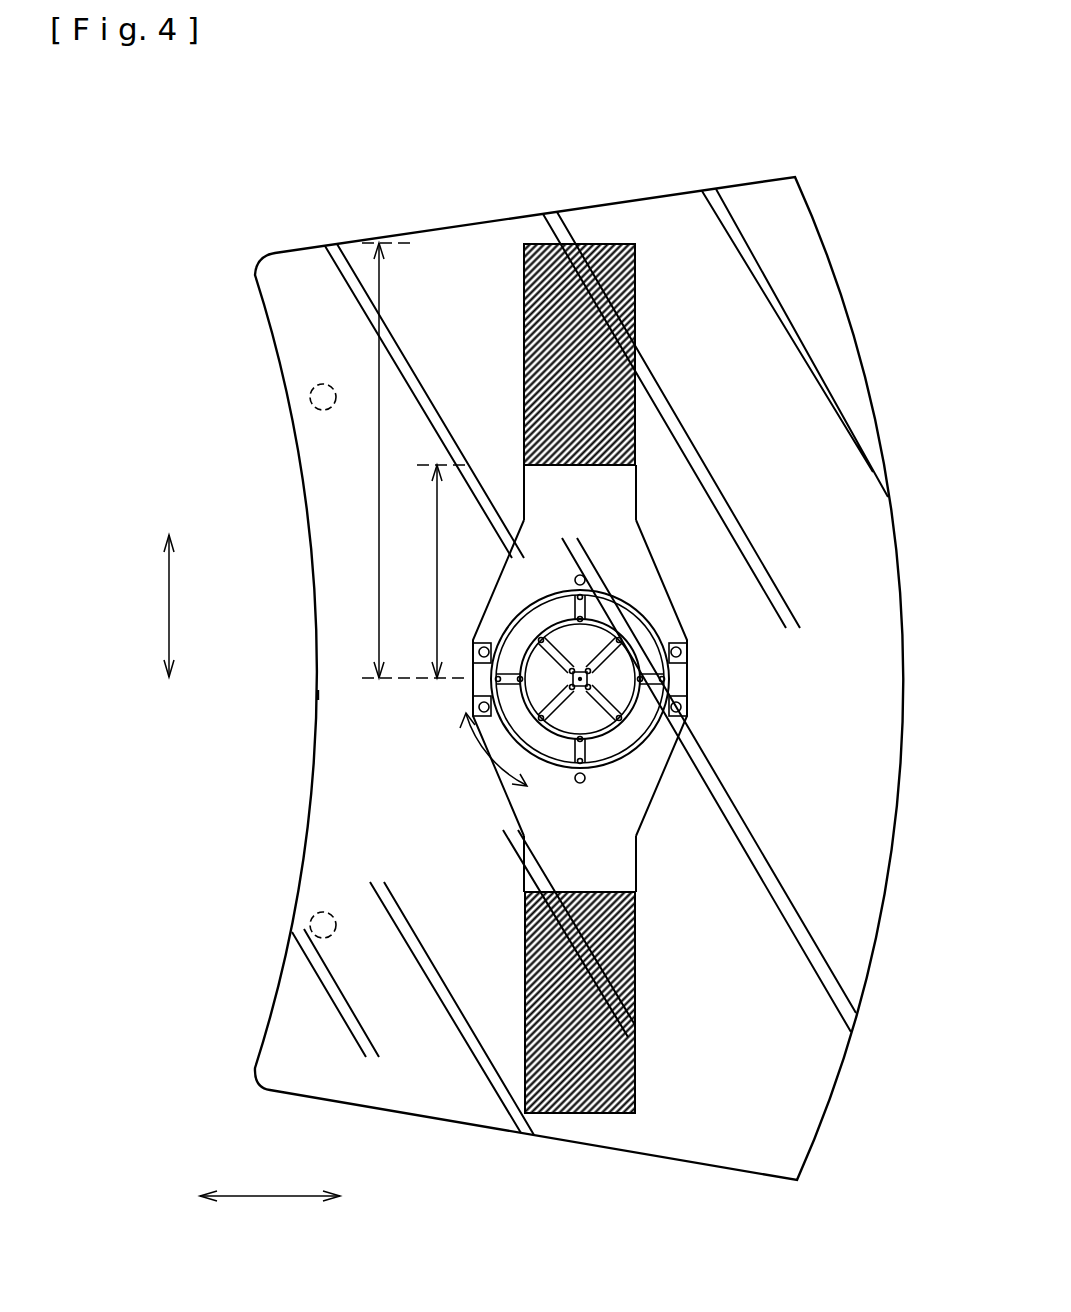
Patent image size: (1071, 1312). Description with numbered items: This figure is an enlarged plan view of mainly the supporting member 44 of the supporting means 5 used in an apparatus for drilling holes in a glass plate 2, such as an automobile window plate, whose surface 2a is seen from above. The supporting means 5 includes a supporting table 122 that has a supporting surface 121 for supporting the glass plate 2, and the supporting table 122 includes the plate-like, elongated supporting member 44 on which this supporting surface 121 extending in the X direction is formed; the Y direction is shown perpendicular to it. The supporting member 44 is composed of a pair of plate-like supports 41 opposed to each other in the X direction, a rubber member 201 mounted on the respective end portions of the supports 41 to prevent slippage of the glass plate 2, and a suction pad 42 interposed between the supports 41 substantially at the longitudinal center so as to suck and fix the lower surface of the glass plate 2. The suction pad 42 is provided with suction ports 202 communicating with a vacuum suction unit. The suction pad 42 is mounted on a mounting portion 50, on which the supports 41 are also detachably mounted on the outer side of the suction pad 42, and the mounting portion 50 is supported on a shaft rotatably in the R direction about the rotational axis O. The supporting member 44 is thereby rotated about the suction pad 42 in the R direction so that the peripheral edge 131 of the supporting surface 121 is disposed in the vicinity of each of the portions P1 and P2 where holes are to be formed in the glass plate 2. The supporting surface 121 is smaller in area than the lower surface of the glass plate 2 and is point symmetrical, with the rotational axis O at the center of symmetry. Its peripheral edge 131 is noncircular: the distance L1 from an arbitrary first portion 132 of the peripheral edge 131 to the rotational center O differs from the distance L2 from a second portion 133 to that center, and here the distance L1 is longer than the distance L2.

The glass plate 2 is at (332, 636).
The panel surface 2a is at (332, 696).
The supporting means 5 is at (519, 238).
The support 41 is at (617, 508).
The suction pad 42 is at (648, 633).
The supporting member 44 is at (660, 565).
The mounting portion 50 is at (684, 672).
The supporting surface 121 is at (636, 292).
The supporting table 122 is at (638, 275).
The peripheral edge 131 is at (636, 320).
The first portion 132 is at (524, 248).
The second portion 133 is at (524, 465).
The rubber member 201 is at (636, 437).
The suction ports 202 is at (591, 693).
The rotational axis O is at (578, 688).
The R direction R is at (484, 757).
The portion where hole is to be formed P1 is at (320, 397).
The portion where hole is to be formed P2 is at (320, 925).
The distance L1 is at (378, 480).
The distance L2 is at (436, 560).
The X direction X is at (169, 606).
The Y direction Y is at (273, 1196).